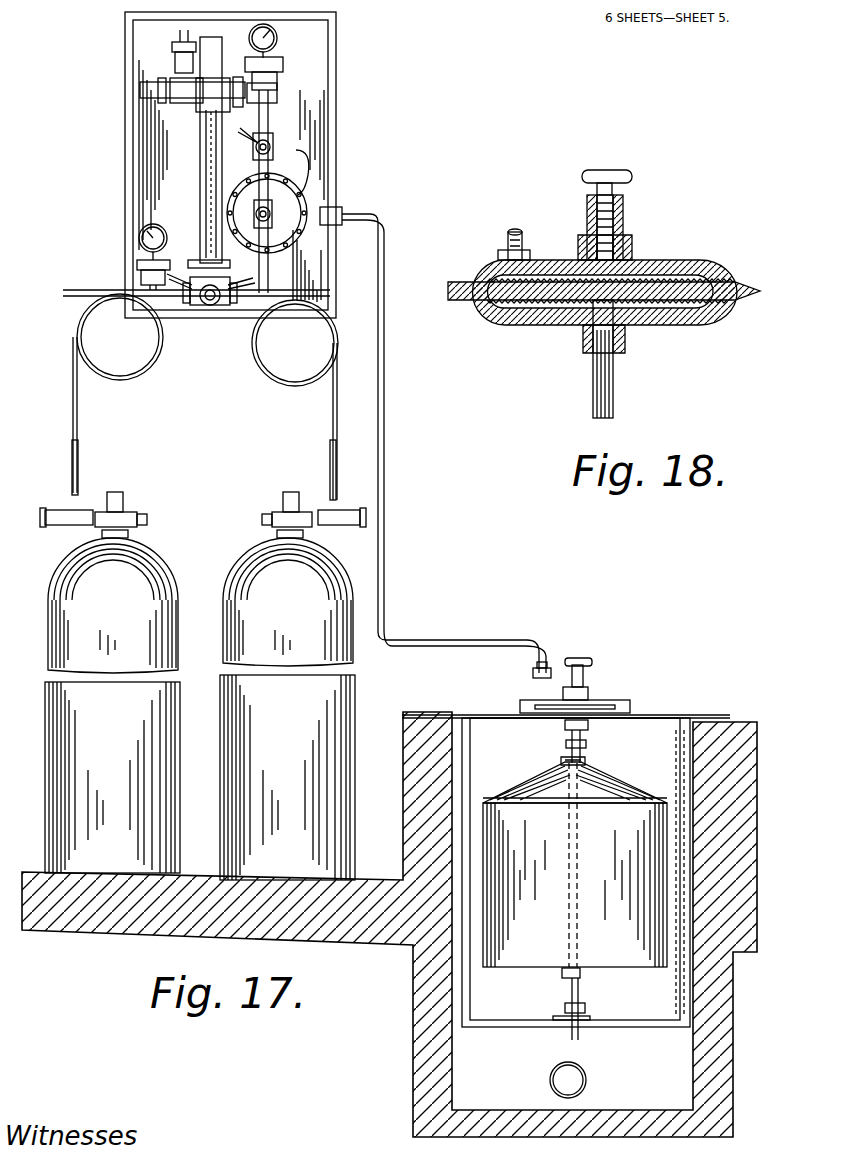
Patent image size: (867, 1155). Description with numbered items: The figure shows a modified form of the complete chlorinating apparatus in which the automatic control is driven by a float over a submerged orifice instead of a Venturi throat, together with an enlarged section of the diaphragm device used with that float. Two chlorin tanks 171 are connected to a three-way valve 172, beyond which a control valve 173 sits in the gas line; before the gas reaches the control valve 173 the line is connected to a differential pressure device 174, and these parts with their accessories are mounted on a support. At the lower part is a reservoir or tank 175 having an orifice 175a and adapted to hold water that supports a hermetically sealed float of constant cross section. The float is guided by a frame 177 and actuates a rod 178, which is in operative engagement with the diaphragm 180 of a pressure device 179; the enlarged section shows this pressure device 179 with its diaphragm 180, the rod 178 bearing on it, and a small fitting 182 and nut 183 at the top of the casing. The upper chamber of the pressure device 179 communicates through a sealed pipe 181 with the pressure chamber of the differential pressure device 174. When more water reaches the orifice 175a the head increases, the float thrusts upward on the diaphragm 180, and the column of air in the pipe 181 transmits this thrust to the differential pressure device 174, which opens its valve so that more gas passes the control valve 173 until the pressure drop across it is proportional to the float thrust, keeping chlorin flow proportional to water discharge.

In FIG. 17, the chlorin tanks 171 is at (242, 570).
In FIG. 17, the three-way valve 172 is at (205, 305).
In FIG. 17, the control valve 173 is at (263, 147).
In FIG. 17, the differential pressure device 174 is at (292, 208).
In FIG. 17, the reservoir or tank 175 is at (738, 720).
In FIG. 17, the orifice 175a is at (587, 1083).
In FIG. 17, the frame 177 is at (478, 772).
In FIG. 17, the rod 178 is at (572, 742).
In FIG. 18, the rod 178 is at (595, 398).
In FIG. 17, the pressure device 179 is at (645, 778).
In FIG. 18, the pressure device 179 is at (690, 318).
In FIG. 18, the diaphragm 180 is at (495, 288).
In FIG. 17, the sealed pipe 181 is at (384, 350).
In FIG. 18, the sealed pipe 181 is at (514, 232).
In FIG. 18, the valve 182 is at (585, 248).
In FIG. 18, the nut 183 is at (632, 250).